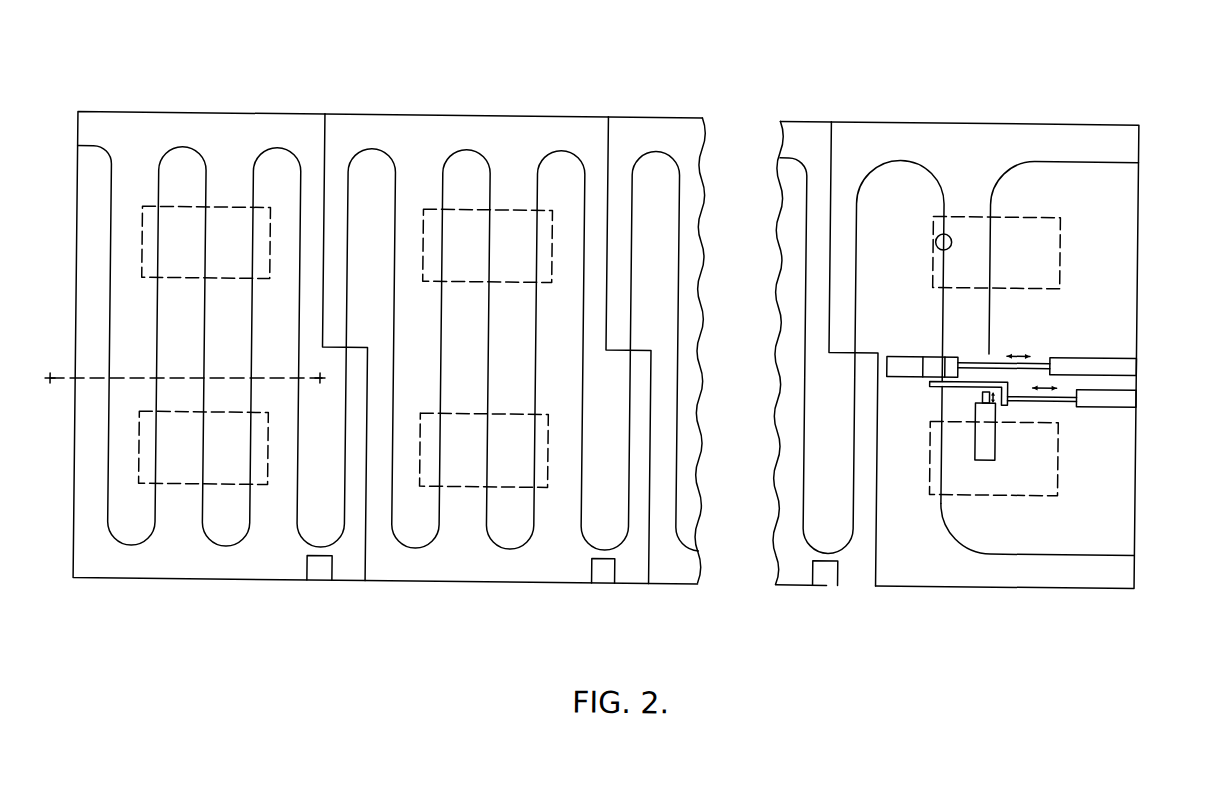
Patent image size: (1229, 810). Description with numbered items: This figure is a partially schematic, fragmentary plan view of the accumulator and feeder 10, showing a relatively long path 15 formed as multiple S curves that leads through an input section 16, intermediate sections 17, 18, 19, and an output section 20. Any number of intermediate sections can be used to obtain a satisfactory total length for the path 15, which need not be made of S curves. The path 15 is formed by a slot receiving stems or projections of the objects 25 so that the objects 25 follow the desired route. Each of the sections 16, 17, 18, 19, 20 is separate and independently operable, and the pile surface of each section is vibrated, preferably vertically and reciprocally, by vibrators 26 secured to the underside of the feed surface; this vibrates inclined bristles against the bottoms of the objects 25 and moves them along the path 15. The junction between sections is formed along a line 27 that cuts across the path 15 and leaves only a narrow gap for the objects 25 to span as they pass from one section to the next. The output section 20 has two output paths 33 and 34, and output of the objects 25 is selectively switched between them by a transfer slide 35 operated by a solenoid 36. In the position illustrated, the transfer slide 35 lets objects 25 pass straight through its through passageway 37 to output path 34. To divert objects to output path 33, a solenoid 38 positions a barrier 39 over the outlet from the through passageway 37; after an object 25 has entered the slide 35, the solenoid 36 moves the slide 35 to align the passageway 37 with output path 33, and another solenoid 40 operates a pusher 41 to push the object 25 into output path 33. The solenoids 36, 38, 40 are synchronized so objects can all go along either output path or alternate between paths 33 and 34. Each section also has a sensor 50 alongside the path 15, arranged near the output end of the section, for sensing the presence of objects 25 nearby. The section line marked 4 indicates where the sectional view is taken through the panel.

The accumulator and feeder 10 is at (611, 40).
The path 15 is at (119, 545).
The input section 16 is at (215, 583).
The intermediate section 17 is at (472, 583).
The intermediate section 18 is at (674, 582).
The intermediate section 19 is at (794, 585).
The output section 20 is at (989, 583).
The object 25 is at (934, 237).
The vibrator 26 is at (214, 211).
The line 27 is at (322, 131).
The output path 33 is at (1051, 158).
The output path 34 is at (1025, 549).
The transfer slide 35 is at (901, 352).
The solenoid 36 is at (1050, 353).
The through passageway 37 is at (920, 372).
The solenoid 38 is at (1085, 402).
The barrier 39 is at (930, 385).
The solenoid 40 is at (998, 441).
The pusher 41 is at (983, 393).
The sensor 50 is at (320, 573).
The section line 4- 4 is at (50, 360).